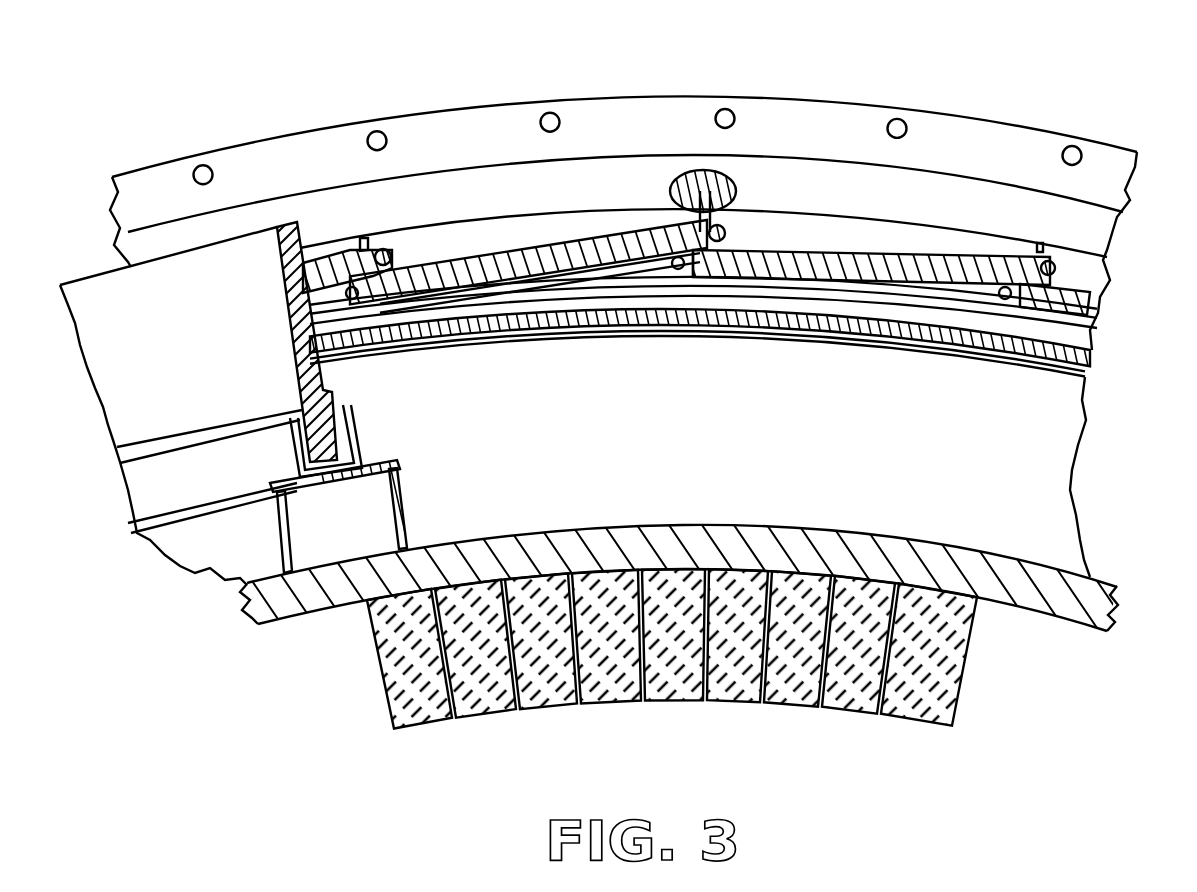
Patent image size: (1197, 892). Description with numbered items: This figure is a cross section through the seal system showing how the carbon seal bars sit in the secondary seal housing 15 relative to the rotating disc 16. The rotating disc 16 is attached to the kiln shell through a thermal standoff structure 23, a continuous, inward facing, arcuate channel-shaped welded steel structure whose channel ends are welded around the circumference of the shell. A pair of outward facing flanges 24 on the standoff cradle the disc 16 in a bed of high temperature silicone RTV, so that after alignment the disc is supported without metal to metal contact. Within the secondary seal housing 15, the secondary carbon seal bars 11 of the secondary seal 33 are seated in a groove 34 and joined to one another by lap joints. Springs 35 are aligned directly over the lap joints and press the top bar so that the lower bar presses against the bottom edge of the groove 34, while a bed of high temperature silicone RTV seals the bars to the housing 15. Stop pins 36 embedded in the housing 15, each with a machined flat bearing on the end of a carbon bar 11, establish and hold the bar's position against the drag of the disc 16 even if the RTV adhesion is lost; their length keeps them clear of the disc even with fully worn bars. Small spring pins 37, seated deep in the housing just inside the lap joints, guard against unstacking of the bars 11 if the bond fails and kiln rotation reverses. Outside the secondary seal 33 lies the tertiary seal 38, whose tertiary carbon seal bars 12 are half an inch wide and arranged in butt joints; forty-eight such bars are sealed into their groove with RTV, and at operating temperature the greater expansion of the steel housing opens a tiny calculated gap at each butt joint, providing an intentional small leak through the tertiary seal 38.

The secondary carbon seal bars 11 is at (447, 258).
The tertiary carbon seal bars 12 is at (722, 326).
The secondary seal housing 15 is at (647, 97).
The rotating disc 16 is at (263, 365).
The thermal standoff structure 23 is at (410, 497).
The outward facing flanges 24 is at (362, 432).
The secondary seal 33 is at (744, 285).
The groove 34 is at (633, 187).
The springs 35 is at (727, 175).
The stop pins 36 is at (726, 232).
The spring pins 37 is at (673, 267).
The tertiary seal 38 is at (739, 443).